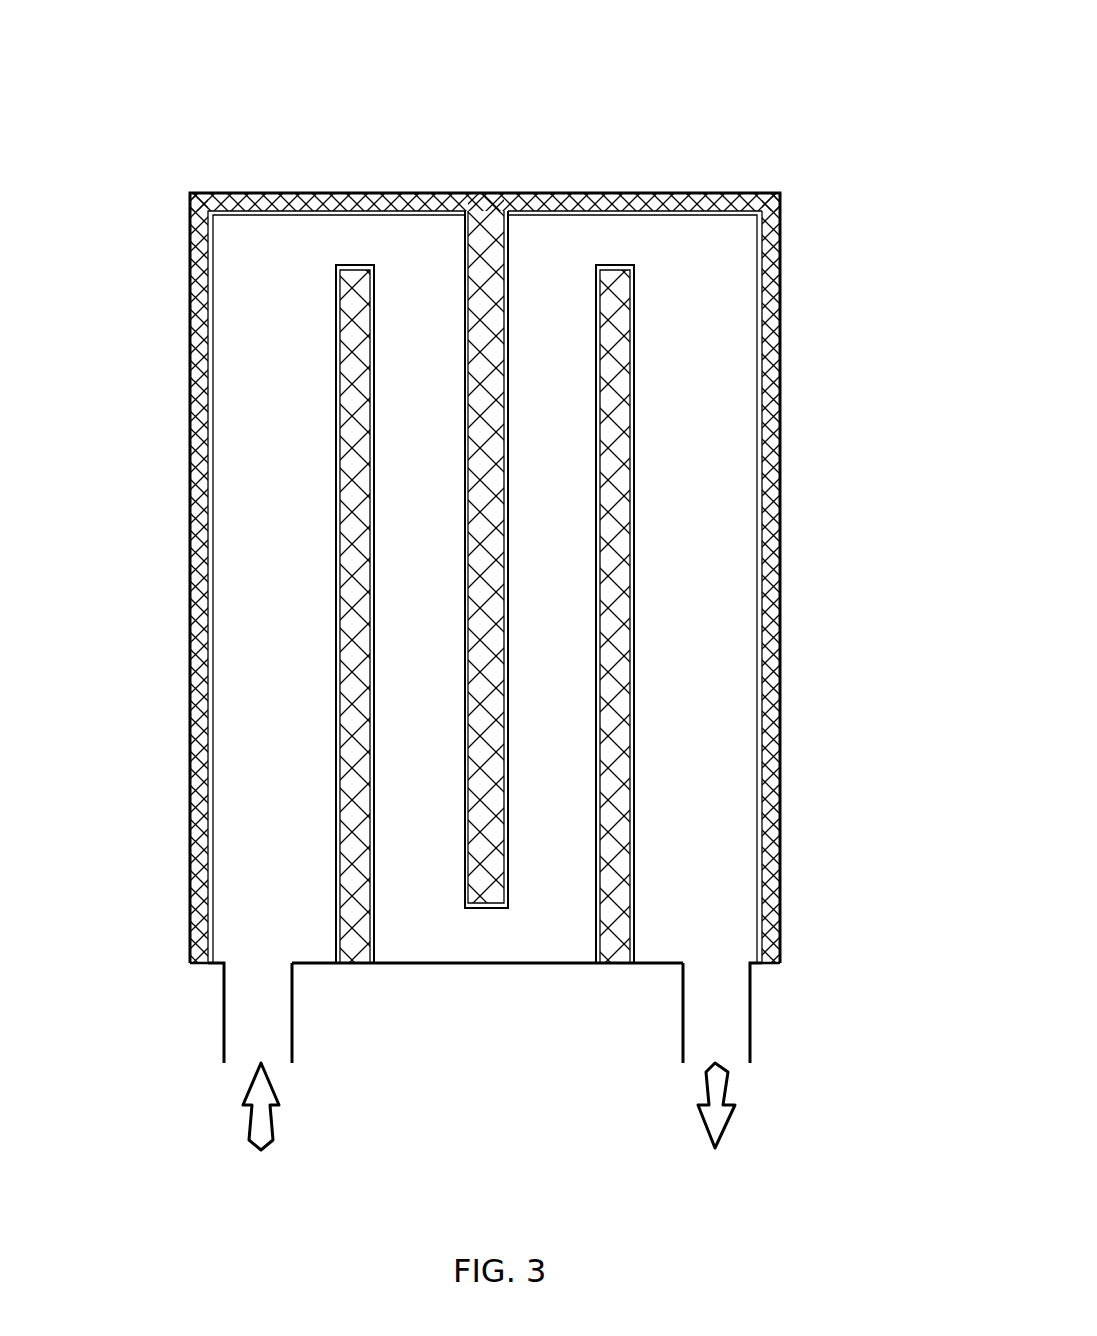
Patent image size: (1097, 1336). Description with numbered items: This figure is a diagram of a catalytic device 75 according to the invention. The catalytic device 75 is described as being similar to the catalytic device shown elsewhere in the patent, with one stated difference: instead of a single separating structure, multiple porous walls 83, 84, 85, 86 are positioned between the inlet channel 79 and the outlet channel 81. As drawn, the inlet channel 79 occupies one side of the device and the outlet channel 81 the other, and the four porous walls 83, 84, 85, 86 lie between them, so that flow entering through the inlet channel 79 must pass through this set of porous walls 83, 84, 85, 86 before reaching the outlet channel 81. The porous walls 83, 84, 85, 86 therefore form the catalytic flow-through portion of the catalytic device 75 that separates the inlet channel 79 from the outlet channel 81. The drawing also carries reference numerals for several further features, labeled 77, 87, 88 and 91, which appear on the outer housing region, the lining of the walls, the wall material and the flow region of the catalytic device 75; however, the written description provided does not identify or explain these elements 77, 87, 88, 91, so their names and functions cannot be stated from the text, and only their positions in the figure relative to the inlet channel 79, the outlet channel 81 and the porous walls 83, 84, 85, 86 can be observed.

The catalytic device 75 is at (870, 83).
The housing 77 is at (777, 268).
The inlet channel 79 is at (261, 735).
The outlet channel 81 is at (712, 757).
The porous wall 83 is at (772, 735).
The porous wall 84 is at (355, 900).
The porous wall 85 is at (615, 920).
The porous wall 86 is at (491, 252).
The liner layer 87 is at (374, 408).
The insulating material 88 is at (352, 487).
The flow path 91 is at (739, 557).